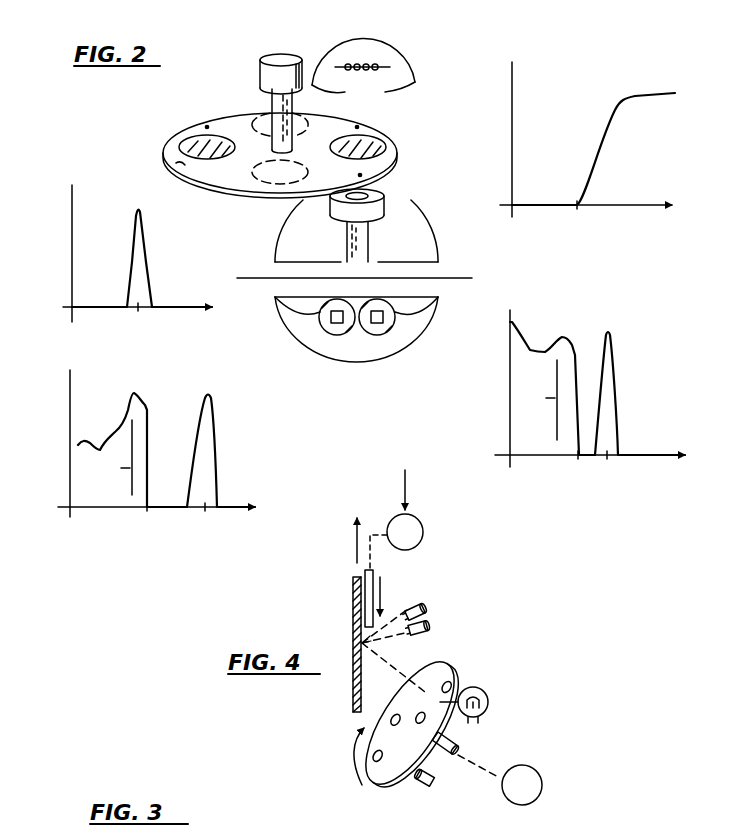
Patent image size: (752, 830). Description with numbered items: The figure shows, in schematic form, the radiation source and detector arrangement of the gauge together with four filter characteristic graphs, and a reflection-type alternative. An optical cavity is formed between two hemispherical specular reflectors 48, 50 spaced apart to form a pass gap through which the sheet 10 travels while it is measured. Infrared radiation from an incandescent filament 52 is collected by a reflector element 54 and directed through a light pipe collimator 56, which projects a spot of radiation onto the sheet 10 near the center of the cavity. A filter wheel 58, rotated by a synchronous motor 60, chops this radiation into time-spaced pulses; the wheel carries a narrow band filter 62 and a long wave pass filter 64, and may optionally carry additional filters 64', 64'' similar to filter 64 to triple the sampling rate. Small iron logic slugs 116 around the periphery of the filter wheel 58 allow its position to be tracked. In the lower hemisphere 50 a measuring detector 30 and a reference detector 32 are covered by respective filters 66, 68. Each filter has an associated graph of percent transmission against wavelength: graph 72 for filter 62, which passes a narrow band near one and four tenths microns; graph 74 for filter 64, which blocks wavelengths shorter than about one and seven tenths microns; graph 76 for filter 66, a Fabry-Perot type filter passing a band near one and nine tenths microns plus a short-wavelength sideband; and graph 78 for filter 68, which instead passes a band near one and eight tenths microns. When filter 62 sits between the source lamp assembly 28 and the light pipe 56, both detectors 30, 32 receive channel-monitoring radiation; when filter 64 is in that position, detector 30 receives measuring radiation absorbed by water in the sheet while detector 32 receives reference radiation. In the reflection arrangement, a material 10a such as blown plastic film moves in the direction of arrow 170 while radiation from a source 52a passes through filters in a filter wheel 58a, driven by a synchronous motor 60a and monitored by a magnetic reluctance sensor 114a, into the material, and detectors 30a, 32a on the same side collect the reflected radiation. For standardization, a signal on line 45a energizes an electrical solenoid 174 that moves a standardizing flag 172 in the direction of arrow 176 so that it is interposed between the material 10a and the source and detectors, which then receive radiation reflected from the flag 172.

In FIG. 2, the sheet 10 is at (457, 277).
In FIG. 2, the source lamp assembly 28 is at (428, 62).
In FIG. 2, the measuring detector 30 is at (320, 309).
In FIG. 2, the reference detector 32 is at (385, 335).
In FIG. 2, the hemispherical specular reflector 48 is at (422, 228).
In FIG. 2, the hemispherical specular reflector 50 is at (422, 322).
In FIG. 2, the incandescent filament 52 is at (372, 63).
In FIG. 2, the reflector element 54 is at (339, 42).
In FIG. 2, the light pipe collimator 56 is at (360, 238).
In FIG. 2, the filter wheel 58 is at (240, 116).
In FIG. 2, the synchronous motor 60 is at (265, 72).
In FIG. 2, the narrow band filter 62 is at (130, 232).
In FIG. 2, the long wave pass filter 64 is at (465, 151).
In FIG. 2, the additional filter 64' is at (312, 115).
In FIG. 2, the additional filter 64'' is at (260, 192).
In FIG. 2, the filter 66 is at (217, 432).
In FIG. 2, the filter 68 is at (610, 342).
In FIG. 2, the graph 72 is at (143, 245).
In FIG. 2, the graph 74 is at (615, 118).
In FIG. 2, the graph 76 is at (202, 410).
In FIG. 2, the graph 78 is at (618, 391).
In FIG. 2, the logic slugs 116 is at (201, 125).
In FIG. 4, the material 10a is at (352, 618).
In FIG. 4, the detector 30a is at (430, 612).
In FIG. 4, the detector 32a is at (432, 628).
In FIG. 4, the line 45a is at (407, 482).
In FIG. 4, the source 52a is at (490, 697).
In FIG. 4, the filter wheel 58a is at (452, 668).
In FIG. 4, the synchronous motor 60a is at (539, 768).
In FIG. 4, the magnetic reluctance sensor 114a is at (420, 790).
In FIG. 4, the arrow 170 is at (357, 551).
In FIG. 4, the standardizing flag 172 is at (375, 573).
In FIG. 4, the electrical solenoid 174 is at (424, 523).
In FIG. 4, the arrow 176 is at (383, 587).